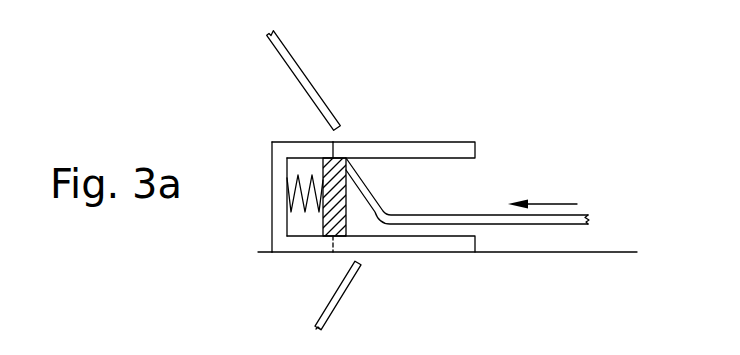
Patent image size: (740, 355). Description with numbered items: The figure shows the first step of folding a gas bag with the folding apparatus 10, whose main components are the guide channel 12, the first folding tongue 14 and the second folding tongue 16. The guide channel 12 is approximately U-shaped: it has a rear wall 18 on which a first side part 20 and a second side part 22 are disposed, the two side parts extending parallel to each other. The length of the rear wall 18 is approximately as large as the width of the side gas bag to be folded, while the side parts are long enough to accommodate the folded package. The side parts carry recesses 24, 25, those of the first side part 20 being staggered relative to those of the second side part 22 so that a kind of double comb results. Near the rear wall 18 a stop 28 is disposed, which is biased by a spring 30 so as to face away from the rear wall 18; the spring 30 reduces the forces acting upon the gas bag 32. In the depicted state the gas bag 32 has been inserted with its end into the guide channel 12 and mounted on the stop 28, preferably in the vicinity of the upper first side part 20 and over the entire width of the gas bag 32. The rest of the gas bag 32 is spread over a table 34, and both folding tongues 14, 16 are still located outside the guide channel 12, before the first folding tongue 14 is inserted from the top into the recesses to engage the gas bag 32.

The folding apparatus 10 is at (243, 127).
The guide channel 12 is at (262, 237).
The first folding tongue 14 is at (314, 68).
The second folding tongue 16 is at (338, 317).
The rear wall 18 is at (272, 168).
The first side part 20 is at (460, 150).
The second side part 22 is at (463, 243).
The recesses 24 is at (407, 150).
The recesses 25 is at (414, 249).
The stop 28 is at (327, 170).
The spring 30 is at (290, 212).
The gas bag 32 is at (368, 196).
The table 34 is at (582, 253).